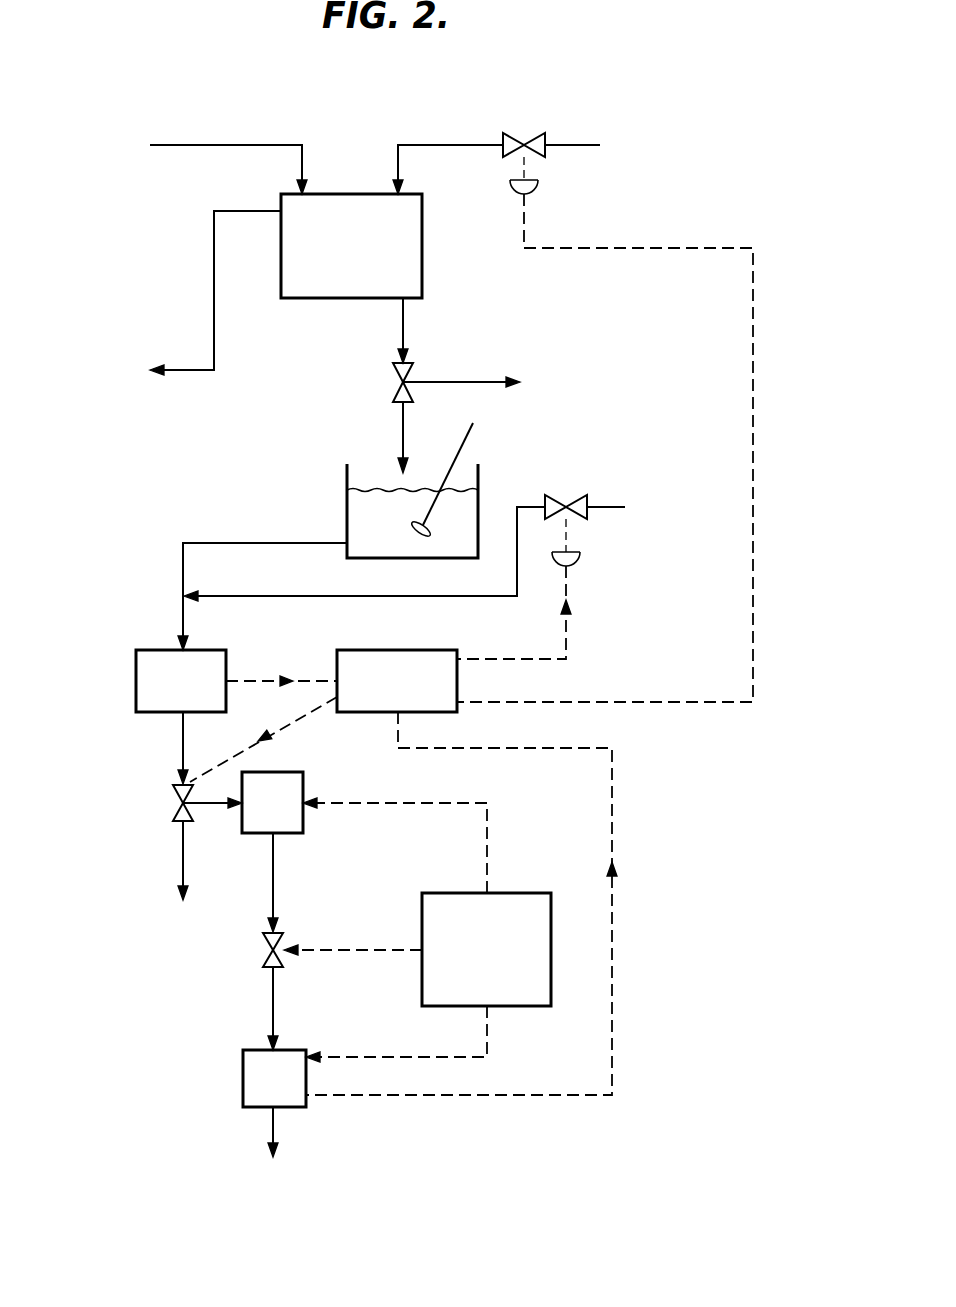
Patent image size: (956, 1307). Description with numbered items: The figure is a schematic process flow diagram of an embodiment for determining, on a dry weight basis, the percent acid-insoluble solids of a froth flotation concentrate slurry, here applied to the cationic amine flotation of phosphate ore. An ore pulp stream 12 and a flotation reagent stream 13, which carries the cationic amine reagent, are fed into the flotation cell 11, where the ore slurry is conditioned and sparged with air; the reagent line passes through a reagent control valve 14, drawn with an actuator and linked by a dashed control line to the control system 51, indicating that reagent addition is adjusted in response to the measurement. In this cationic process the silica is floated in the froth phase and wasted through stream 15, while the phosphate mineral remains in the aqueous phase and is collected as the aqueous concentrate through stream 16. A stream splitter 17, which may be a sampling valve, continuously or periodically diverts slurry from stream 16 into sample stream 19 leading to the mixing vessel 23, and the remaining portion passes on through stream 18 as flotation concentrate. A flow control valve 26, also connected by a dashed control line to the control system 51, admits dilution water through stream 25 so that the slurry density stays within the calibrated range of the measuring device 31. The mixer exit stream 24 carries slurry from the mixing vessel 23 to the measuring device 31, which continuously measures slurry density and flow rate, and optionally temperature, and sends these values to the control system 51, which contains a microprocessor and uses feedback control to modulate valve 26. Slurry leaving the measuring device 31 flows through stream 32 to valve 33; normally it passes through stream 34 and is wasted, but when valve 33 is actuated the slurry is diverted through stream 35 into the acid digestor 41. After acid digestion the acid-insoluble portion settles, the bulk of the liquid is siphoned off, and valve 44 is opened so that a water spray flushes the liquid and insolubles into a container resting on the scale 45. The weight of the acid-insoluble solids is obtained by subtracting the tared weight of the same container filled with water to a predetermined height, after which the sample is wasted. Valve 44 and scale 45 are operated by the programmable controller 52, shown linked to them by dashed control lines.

The flotation cell 11 is at (422, 252).
The ore pulp stream 12 is at (229, 144).
The flotation reagent stream 13 is at (443, 145).
The reagent control valve 14 is at (540, 133).
The froth stream 15 is at (214, 251).
The aqueous concentrate stream 16 is at (403, 327).
The stream splitter 17 is at (396, 379).
The remaining slurry stream 18 is at (470, 382).
The sample stream 19 is at (403, 433).
The mixing vessel 23 is at (345, 503).
The mixer exit stream 24 is at (231, 543).
The dilution water stream 25 is at (257, 599).
The flow control valve 26 is at (565, 494).
The measuring device 31 is at (136, 676).
The measured slurry stream 32 is at (183, 749).
The diverter valve 33 is at (177, 811).
The waste stream 34 is at (183, 869).
The digestor feed stream 35 is at (210, 806).
The acid digestor 41 is at (303, 778).
The valve 44 is at (268, 952).
The scale 45 is at (243, 1071).
The control system 51 is at (436, 650).
The programmable controller 52 is at (520, 893).